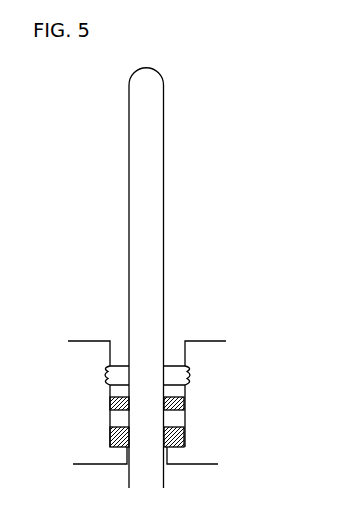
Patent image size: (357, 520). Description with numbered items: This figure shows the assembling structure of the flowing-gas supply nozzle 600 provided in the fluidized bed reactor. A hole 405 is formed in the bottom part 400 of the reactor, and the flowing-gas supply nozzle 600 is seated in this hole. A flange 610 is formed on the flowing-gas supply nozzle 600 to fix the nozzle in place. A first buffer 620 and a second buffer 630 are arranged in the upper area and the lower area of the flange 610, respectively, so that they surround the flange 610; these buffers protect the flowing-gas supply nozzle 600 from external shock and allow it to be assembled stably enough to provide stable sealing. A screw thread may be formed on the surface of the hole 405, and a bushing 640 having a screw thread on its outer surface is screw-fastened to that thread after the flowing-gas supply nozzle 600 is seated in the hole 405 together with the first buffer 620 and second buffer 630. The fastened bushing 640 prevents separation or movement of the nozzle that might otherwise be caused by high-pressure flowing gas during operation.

The bottom part 400 is at (177, 457).
The hole 405 is at (170, 343).
The flowing-gas supply nozzle 600 is at (164, 225).
The flange 610 is at (178, 417).
The first buffer 620 is at (118, 367).
The second buffer 630 is at (165, 440).
The bushing 640 is at (165, 403).